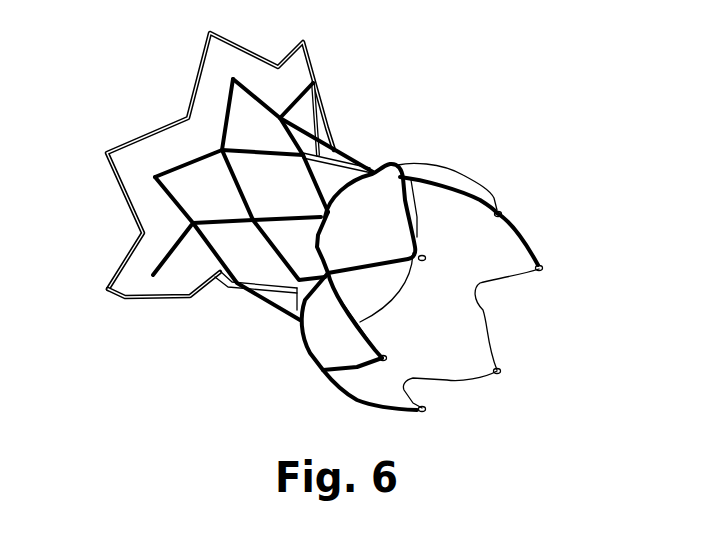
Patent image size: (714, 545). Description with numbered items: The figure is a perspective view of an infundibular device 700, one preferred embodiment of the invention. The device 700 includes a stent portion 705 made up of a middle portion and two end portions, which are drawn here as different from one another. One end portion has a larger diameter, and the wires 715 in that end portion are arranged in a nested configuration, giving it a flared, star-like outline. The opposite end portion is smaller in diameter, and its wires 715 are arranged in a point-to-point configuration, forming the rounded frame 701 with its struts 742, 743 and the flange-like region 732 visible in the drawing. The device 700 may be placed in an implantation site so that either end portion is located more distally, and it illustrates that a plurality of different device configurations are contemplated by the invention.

The device 700 is at (311, 247).
The stent frame 701 is at (447, 312).
The stent portion 705 is at (358, 132).
The wires 715 is at (232, 285).
The flared flange 732 is at (120, 192).
The strut 742 is at (400, 413).
The strut 743 is at (539, 262).